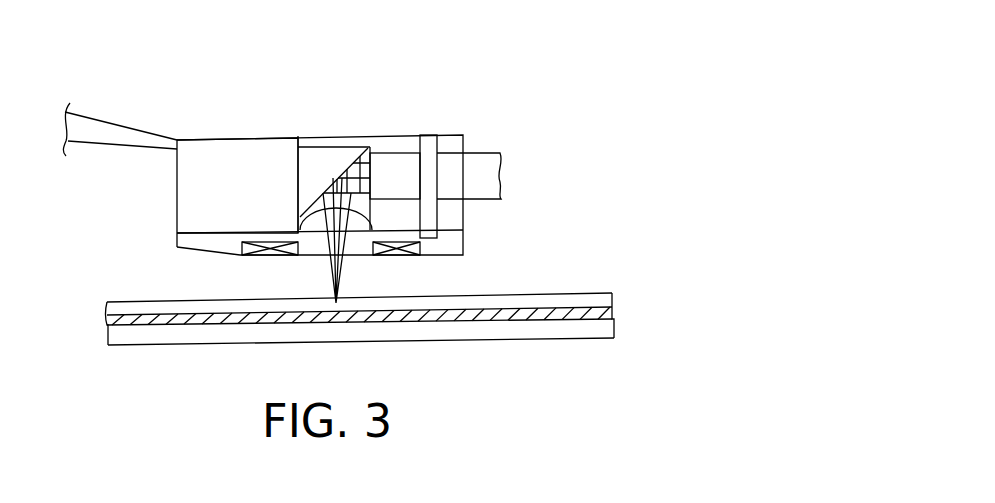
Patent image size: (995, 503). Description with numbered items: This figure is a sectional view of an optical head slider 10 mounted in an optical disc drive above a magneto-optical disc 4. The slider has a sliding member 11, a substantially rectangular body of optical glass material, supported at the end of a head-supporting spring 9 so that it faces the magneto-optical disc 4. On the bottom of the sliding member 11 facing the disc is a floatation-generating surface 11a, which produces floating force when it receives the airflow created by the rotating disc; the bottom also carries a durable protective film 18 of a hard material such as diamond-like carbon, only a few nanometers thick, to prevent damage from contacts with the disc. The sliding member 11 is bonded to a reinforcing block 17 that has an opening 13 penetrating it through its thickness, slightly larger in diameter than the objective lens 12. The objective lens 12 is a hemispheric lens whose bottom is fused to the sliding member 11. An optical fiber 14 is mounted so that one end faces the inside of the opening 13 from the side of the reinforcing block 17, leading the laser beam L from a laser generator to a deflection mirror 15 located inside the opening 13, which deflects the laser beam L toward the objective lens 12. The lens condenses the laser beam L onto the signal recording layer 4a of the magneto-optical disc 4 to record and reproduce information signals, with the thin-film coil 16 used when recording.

The optical head slider 10 is at (212, 66).
The head-supporting spring 9 is at (113, 135).
The reinforcing block 17 is at (240, 148).
The deflection mirror 15 is at (325, 147).
The opening 13 is at (368, 147).
The optical fiber 14 is at (488, 156).
The durable protective film 18 is at (445, 256).
The sliding member 11 is at (455, 243).
The floatation-generating surface 11a is at (198, 250).
The objective lens 12 is at (316, 222).
The thin-film coil 16 is at (402, 255).
The laser beam L is at (343, 277).
The magneto-optical disc 4 is at (598, 294).
The signal recording layer 4a is at (515, 321).